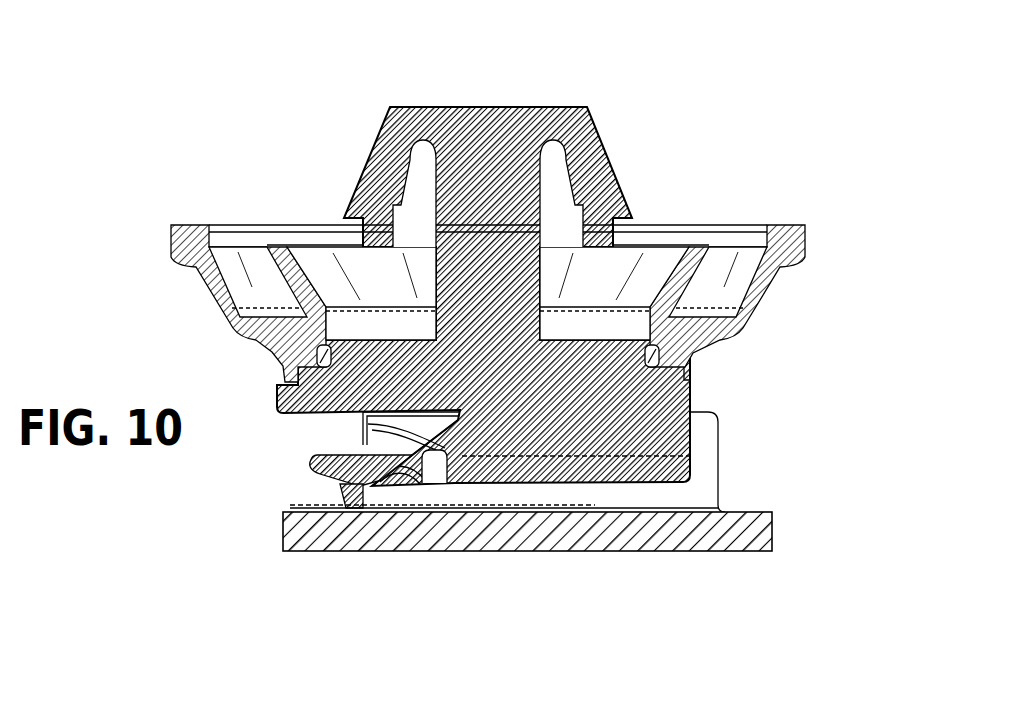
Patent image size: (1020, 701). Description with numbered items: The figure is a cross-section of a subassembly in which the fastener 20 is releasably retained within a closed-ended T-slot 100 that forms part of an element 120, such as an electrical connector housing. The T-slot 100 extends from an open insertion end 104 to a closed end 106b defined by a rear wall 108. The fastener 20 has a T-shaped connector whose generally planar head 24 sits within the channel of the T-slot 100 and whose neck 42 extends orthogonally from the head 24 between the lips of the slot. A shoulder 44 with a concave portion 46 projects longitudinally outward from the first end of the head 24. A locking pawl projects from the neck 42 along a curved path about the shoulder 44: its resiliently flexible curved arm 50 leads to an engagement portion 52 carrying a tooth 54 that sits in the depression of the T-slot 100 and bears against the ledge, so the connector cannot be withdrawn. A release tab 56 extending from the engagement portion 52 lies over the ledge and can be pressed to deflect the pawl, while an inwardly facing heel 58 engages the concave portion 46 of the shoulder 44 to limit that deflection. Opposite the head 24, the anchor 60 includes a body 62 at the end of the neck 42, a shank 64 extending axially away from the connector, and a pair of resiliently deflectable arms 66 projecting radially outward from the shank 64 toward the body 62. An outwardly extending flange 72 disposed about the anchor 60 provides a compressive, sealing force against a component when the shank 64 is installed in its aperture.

The fastener 20 is at (738, 102).
The head 24 is at (613, 467).
The neck 42 is at (693, 447).
The shoulder 44 is at (452, 463).
The concave portion 46 is at (450, 484).
The curved arm 50 is at (368, 428).
The engagement portion 52 is at (398, 495).
The tooth 54 is at (385, 505).
The release tab 56 is at (328, 466).
The heel 58 is at (418, 484).
The anchor 60 is at (318, 162).
The body 62 is at (287, 392).
The shank 64 is at (510, 167).
The arms 66 is at (388, 152).
The flange 72 is at (768, 302).
The T-slot 100 is at (740, 590).
The insertion end 104 is at (338, 495).
The closed end 106b is at (703, 411).
The rear wall 108 is at (710, 436).
The element 120 is at (773, 546).